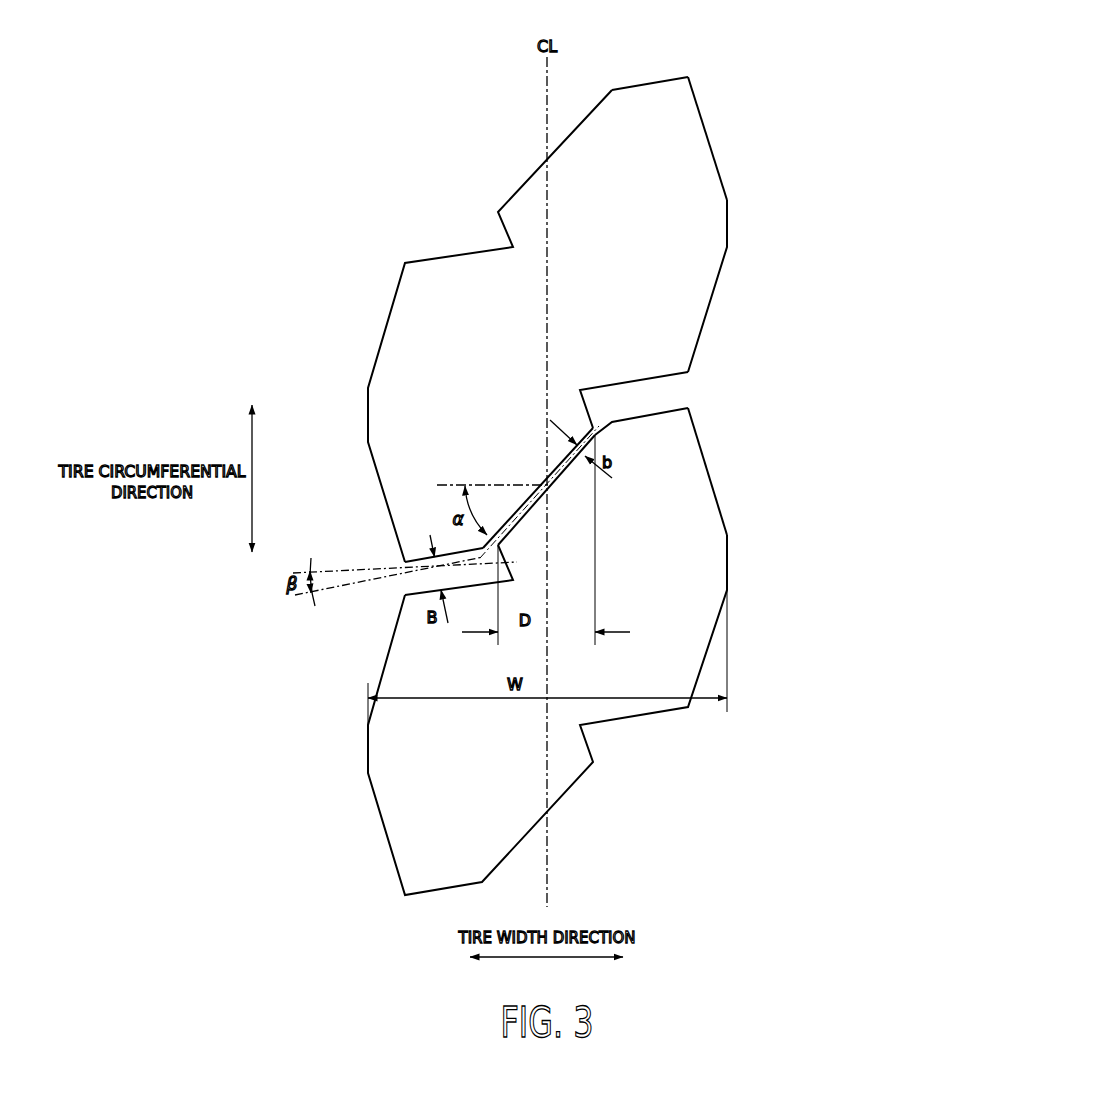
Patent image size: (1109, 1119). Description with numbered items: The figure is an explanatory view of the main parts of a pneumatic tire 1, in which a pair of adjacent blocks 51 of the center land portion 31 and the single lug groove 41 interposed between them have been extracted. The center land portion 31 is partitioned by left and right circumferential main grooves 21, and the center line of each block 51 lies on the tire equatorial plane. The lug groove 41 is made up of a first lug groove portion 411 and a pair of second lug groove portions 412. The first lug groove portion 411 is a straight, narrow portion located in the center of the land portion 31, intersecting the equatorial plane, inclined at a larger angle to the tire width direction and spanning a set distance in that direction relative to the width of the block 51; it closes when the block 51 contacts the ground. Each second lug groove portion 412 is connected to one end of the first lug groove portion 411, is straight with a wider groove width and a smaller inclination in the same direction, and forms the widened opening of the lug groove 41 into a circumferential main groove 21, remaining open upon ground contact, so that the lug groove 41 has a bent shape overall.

The pneumatic tire 1 is at (775, 60).
The circumferential main groove 21 is at (725, 108).
The center land portion 31 is at (623, 72).
The lug groove 41 is at (683, 393).
The first lug groove portion 411 is at (550, 472).
The second lug groove portion 412 is at (637, 398).
The block 51 is at (722, 177).